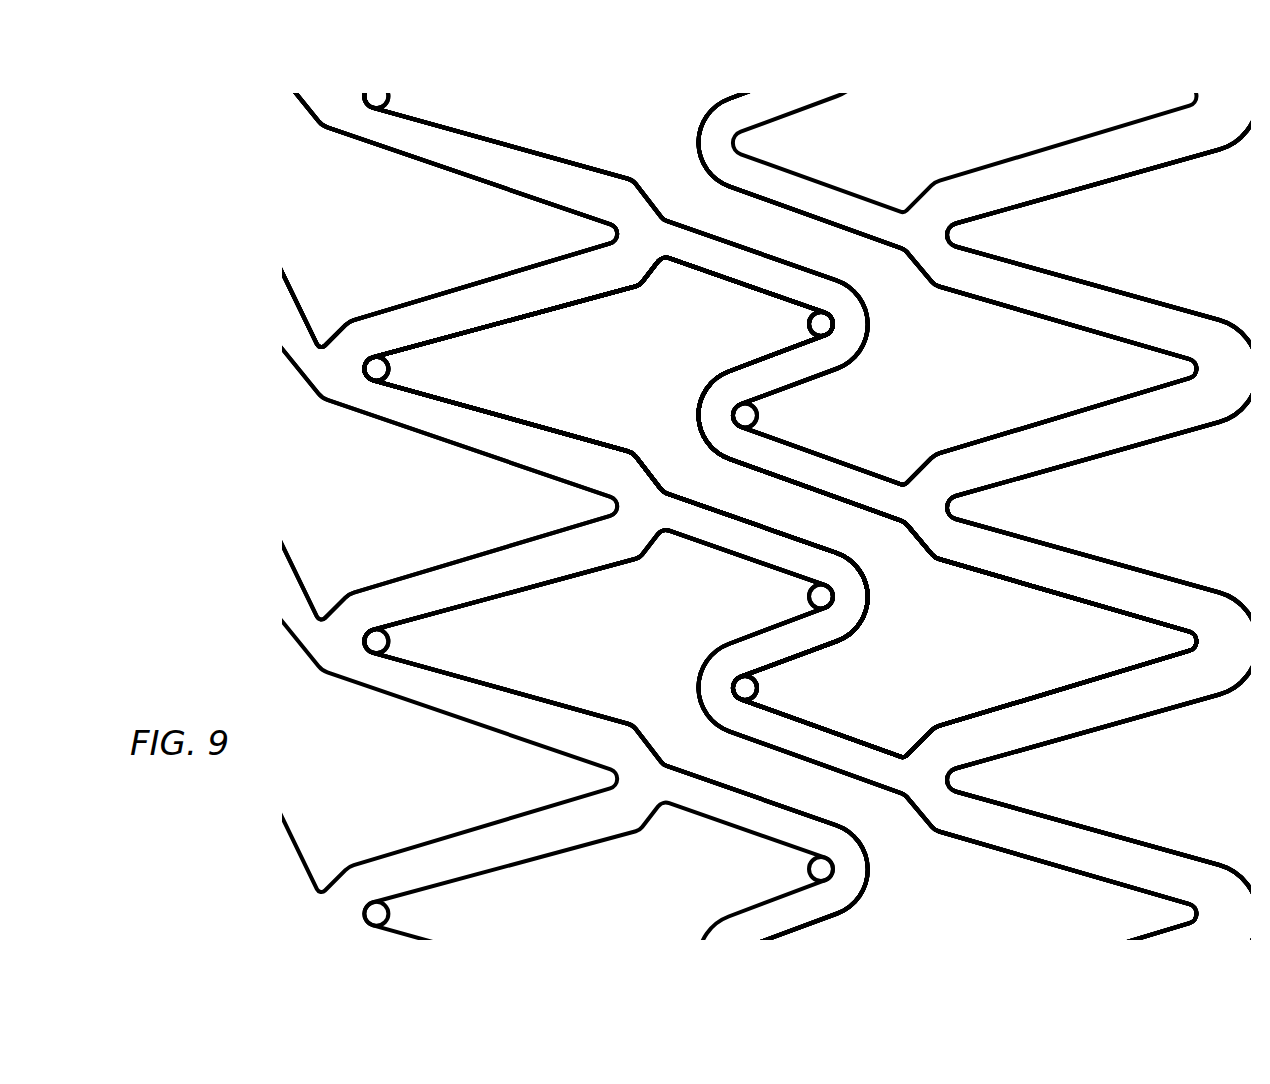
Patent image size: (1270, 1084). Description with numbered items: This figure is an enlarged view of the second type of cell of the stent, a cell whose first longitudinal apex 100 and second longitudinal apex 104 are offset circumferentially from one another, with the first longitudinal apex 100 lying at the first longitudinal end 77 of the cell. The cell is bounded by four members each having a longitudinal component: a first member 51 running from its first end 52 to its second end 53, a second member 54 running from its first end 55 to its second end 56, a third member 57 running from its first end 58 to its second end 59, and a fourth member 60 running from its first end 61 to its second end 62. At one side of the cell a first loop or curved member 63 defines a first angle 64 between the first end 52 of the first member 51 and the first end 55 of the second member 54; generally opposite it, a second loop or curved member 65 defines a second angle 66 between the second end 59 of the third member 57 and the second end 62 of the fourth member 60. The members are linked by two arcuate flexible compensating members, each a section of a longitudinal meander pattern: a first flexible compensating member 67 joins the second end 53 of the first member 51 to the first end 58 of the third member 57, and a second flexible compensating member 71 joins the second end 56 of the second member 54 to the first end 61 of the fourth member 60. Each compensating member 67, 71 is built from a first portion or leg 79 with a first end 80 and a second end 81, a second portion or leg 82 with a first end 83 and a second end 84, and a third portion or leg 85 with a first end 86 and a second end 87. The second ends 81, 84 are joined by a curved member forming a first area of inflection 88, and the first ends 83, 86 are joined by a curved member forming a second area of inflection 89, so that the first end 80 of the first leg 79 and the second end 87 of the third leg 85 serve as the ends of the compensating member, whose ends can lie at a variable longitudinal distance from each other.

The first member 51 is at (455, 289).
The first end of the first member 52 is at (372, 313).
The second end of the first member 53 is at (563, 257).
The second member 54 is at (533, 425).
The first end of the second member 55 is at (402, 391).
The second end of the second member 56 is at (618, 447).
The third member 57 is at (1097, 558).
The first end of the third member 58 is at (982, 522).
The second end of the third member 59 is at (1185, 584).
The fourth member 60 is at (1068, 688).
The first end of the fourth member 61 is at (969, 717).
The second end of the fourth member 62 is at (1153, 664).
The first loop or curved member 63 is at (376, 382).
The first angle 64 is at (392, 372).
The second loop or curved member 65 is at (1238, 688).
The second angle 66 is at (1180, 645).
The first flexible compensating member 67 is at (697, 412).
The second flexible compensating member 71 is at (868, 597).
The first longitudinal end 77 is at (342, 322).
The first portion or leg 79 is at (750, 248).
The first end of the first portion 80 is at (676, 229).
The second end of the first portion 81 is at (836, 278).
The second portion or leg 82 is at (770, 356).
The first end of the second portion 83 is at (735, 372).
The second end of the second portion 84 is at (812, 333).
The third portion or leg 85 is at (831, 458).
The first end of the third portion 86 is at (755, 432).
The second end of the third portion 87 is at (893, 479).
The first area of inflection 88 is at (836, 322).
The second area of inflection 89 is at (760, 410).
The first longitudinal apex 100 is at (328, 395).
The second longitudinal apex 104 is at (1242, 612).